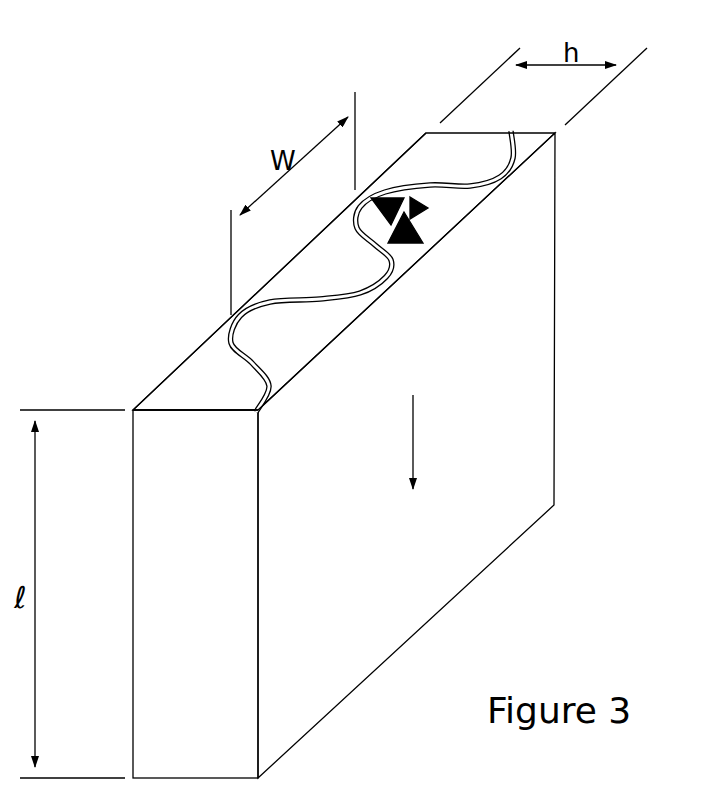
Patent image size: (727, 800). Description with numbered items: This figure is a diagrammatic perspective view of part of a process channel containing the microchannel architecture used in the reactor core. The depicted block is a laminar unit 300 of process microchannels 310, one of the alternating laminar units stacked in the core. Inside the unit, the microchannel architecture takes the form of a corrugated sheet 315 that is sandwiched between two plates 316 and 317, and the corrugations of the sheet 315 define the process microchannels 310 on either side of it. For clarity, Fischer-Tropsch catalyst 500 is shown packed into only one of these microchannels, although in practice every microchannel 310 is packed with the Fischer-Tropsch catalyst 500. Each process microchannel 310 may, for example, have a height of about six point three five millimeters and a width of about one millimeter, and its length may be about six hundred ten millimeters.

The laminar unit 300 is at (555, 273).
The process microchannel 310 is at (462, 150).
The corrugated sheet 315 is at (395, 283).
The plate 316 is at (297, 383).
The plate 317 is at (173, 370).
The Fischer-Tropsch catalyst 500 is at (415, 197).